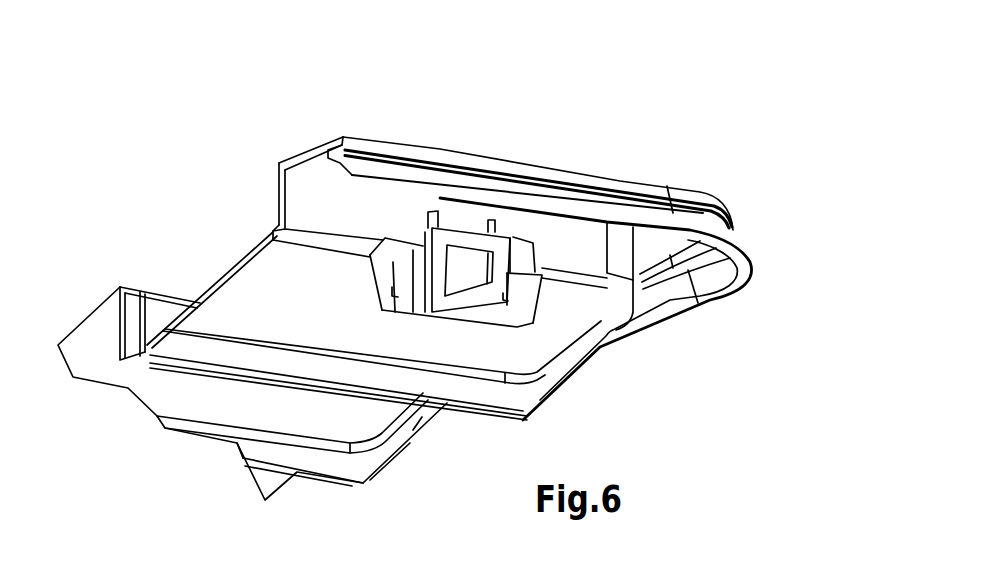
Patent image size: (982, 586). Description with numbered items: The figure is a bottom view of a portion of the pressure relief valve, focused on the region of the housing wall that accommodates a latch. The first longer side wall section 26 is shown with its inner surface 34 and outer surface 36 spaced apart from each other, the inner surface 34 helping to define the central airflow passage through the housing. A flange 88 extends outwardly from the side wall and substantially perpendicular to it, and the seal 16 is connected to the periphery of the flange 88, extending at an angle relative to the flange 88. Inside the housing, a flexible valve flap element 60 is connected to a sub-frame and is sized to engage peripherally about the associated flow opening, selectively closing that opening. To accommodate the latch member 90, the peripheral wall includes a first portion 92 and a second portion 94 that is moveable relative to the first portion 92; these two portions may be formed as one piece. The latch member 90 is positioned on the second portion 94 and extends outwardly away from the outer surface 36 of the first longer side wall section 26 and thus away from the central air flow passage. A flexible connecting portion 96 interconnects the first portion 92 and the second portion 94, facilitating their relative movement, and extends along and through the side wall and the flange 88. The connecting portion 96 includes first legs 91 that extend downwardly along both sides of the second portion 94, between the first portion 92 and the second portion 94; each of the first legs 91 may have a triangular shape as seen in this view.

The seal 16 is at (722, 223).
The first longer side wall section 26 is at (250, 186).
The inner surface 34 is at (278, 205).
The outer surface 36 is at (308, 193).
The flexible valve flap element 60 is at (245, 297).
The flange 88 is at (308, 150).
The latch member 90 is at (488, 198).
The first legs 91 is at (410, 287).
The first portion 92 is at (560, 238).
The second portion 94 is at (465, 205).
The flexible connecting portion 96 is at (409, 210).